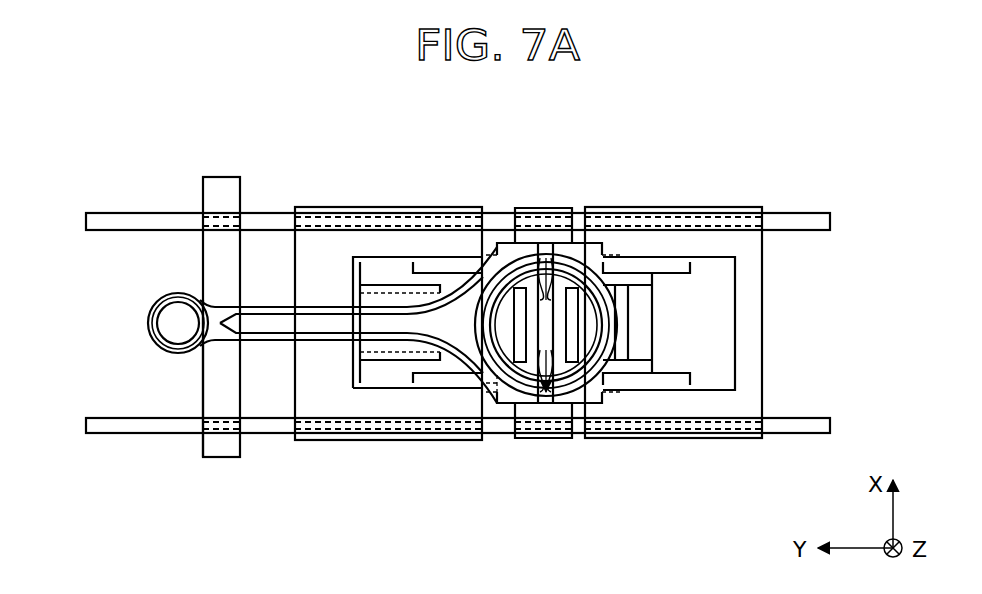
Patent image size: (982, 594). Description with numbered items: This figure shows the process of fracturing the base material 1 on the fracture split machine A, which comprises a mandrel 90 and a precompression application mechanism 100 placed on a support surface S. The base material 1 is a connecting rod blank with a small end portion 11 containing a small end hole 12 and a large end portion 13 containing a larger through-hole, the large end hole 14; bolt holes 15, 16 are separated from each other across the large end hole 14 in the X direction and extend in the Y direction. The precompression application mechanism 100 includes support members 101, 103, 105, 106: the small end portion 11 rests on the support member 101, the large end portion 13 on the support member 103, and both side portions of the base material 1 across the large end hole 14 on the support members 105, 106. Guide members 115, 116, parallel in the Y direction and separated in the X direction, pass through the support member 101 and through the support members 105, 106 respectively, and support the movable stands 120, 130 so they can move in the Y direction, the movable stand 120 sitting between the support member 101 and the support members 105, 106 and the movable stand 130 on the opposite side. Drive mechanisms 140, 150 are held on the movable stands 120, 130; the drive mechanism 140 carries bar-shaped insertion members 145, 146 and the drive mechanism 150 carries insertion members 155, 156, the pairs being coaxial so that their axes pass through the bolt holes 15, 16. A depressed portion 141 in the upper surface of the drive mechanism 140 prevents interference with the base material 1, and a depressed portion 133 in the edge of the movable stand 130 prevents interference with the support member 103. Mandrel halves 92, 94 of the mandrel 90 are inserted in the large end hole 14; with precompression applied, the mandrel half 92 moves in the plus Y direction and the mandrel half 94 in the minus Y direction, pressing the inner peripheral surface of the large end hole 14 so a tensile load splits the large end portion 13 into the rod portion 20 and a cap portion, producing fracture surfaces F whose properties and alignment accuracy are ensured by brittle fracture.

The base material 1 is at (375, 315).
The small end portion 11 is at (172, 323).
The small end hole 12 is at (160, 264).
The large end portion 13 is at (614, 255).
The large end hole 14 is at (482, 262).
The bolt hole 15 is at (500, 268).
The bolt hole 16 is at (558, 405).
The rod portion 20 is at (393, 305).
The mandrel 90 is at (574, 255).
The mandrel half 92 is at (540, 258).
The mandrel half 94 is at (582, 262).
The precompression application mechanism 100 is at (709, 281).
The support member 101 is at (228, 380).
The support member 103 is at (600, 403).
The support member 105 is at (523, 208).
The support member 106 is at (522, 440).
The guide member 115 is at (127, 213).
The guide member 116 is at (140, 433).
The movable stand 120 is at (303, 207).
The movable stand 130 is at (705, 207).
The depressed portion 133 is at (650, 360).
The drive mechanism 140 is at (325, 373).
The depressed portion 141 is at (366, 292).
The insertion member 145 is at (448, 257).
The insertion member 146 is at (478, 392).
The drive mechanism 150 is at (722, 292).
The insertion member 155 is at (650, 268).
The insertion member 156 is at (648, 385).
The support surface S is at (75, 317).
The fracture split machine A is at (843, 70).
The fracture surfaces F is at (546, 325).